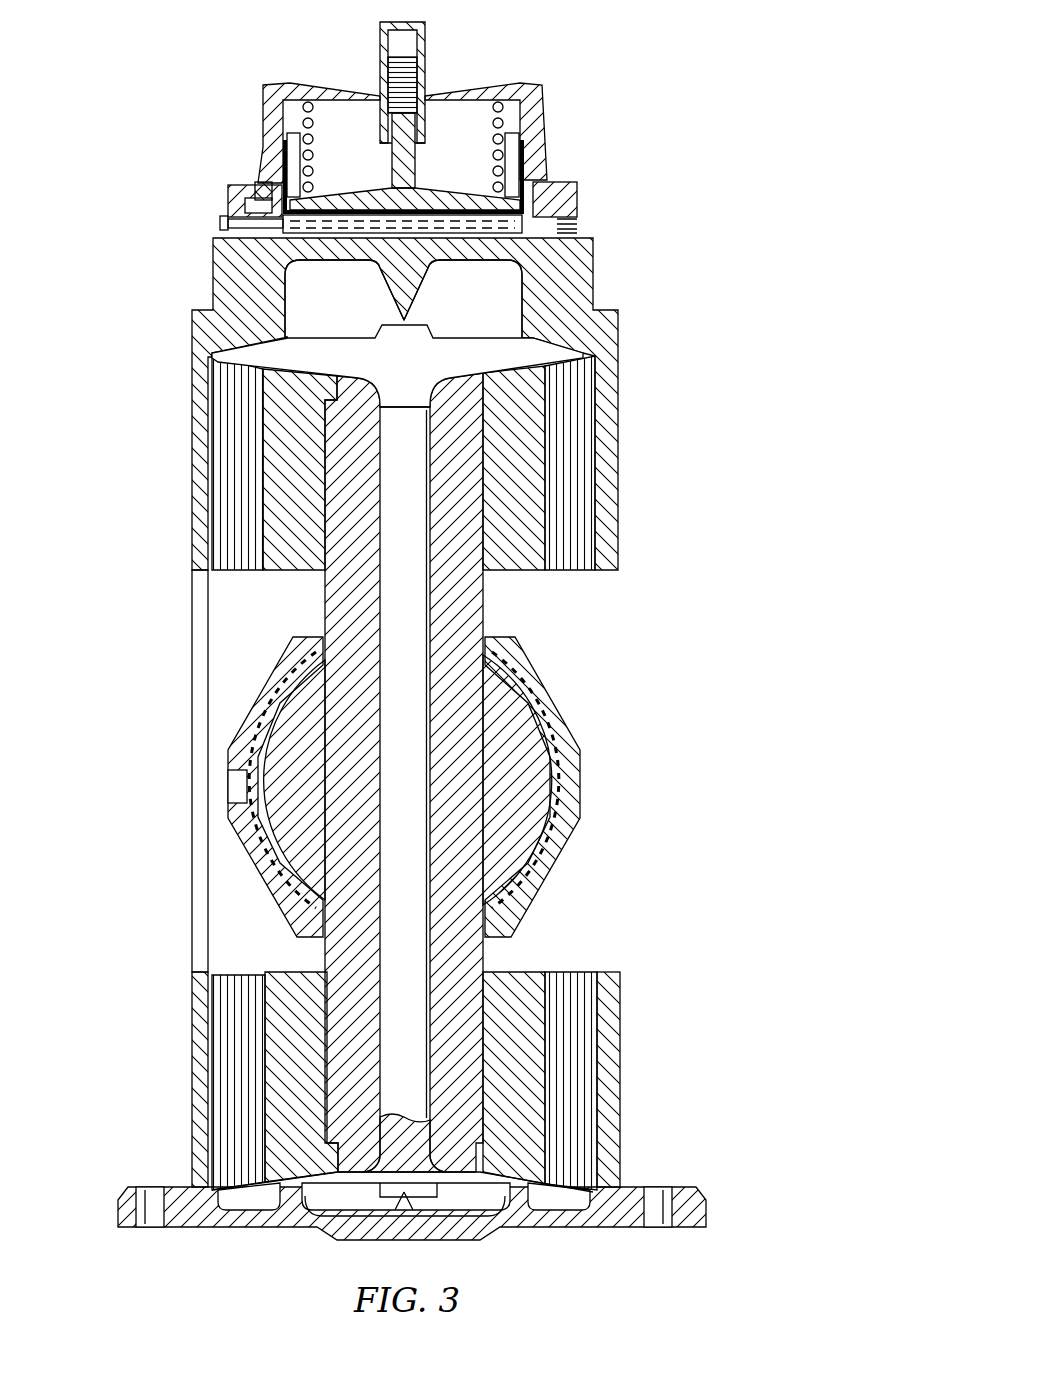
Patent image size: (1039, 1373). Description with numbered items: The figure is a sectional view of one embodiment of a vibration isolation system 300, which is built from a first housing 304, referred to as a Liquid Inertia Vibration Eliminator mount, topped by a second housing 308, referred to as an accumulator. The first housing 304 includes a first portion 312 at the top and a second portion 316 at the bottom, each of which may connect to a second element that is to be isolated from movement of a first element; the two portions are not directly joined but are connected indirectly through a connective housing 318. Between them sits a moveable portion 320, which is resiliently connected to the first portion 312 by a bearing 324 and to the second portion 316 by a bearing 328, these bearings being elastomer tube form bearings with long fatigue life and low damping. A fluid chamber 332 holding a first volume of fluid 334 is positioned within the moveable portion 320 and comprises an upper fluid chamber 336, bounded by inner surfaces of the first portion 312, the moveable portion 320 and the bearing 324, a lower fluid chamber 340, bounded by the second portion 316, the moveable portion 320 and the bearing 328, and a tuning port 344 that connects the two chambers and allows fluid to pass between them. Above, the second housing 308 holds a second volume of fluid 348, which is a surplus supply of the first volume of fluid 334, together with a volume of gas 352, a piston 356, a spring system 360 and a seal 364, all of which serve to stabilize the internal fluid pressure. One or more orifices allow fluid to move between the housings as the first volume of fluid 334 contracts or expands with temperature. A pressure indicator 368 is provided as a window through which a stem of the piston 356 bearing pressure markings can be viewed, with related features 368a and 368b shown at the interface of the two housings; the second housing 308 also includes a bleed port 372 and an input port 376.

The vibration isolation system 300 is at (103, 68).
The first housing 304 is at (703, 240).
The second housing 308 is at (703, 22).
The first portion 312 is at (625, 415).
The second portion 316 is at (632, 1072).
The connective housing 318 is at (192, 773).
The moveable portion 320 is at (492, 604).
The bearing 324 is at (590, 571).
The bearing 328 is at (578, 971).
The fluid chamber 332 is at (437, 773).
The first volume of fluid 334 is at (400, 492).
The upper fluid chamber 336 is at (305, 372).
The lower fluid chamber 340 is at (330, 1230).
The tuning port 344 is at (372, 616).
The second volume of fluid 348 is at (477, 228).
The volume of gas 352 is at (325, 115).
The piston 356 is at (362, 197).
The spring system 360 is at (505, 105).
The seal 364 is at (545, 148).
The pressure indicator 368 is at (432, 70).
The first lobe 368a is at (356, 265).
The second lobe 368b is at (452, 265).
The bleed port 372 is at (262, 183).
The input port 376 is at (228, 225).